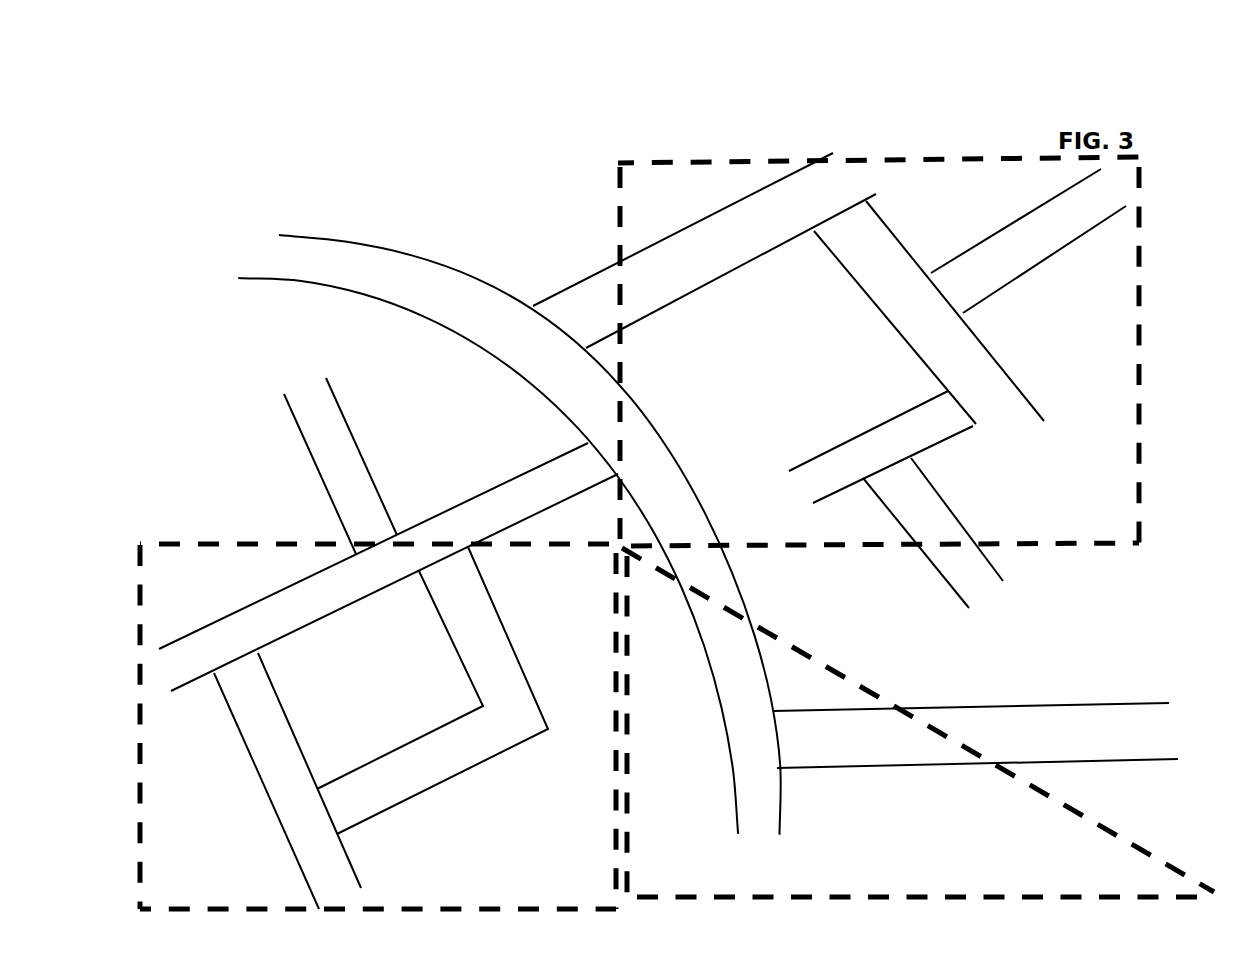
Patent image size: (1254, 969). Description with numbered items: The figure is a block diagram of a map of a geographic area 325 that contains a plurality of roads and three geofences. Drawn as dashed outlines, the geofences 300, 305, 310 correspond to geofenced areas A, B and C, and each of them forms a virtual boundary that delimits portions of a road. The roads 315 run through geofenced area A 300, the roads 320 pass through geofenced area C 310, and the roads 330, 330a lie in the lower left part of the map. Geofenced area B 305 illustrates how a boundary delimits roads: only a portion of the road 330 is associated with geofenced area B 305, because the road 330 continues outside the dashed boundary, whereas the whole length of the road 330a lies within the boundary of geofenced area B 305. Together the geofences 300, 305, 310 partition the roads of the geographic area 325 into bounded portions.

The geofence 300 is at (617, 165).
The geofence 305 is at (192, 537).
The geofence 310 is at (812, 645).
The road 315 is at (829, 380).
The road 320 is at (708, 535).
The geographic area 325 is at (599, 114).
The road 330 is at (388, 643).
The road 330a is at (432, 690).